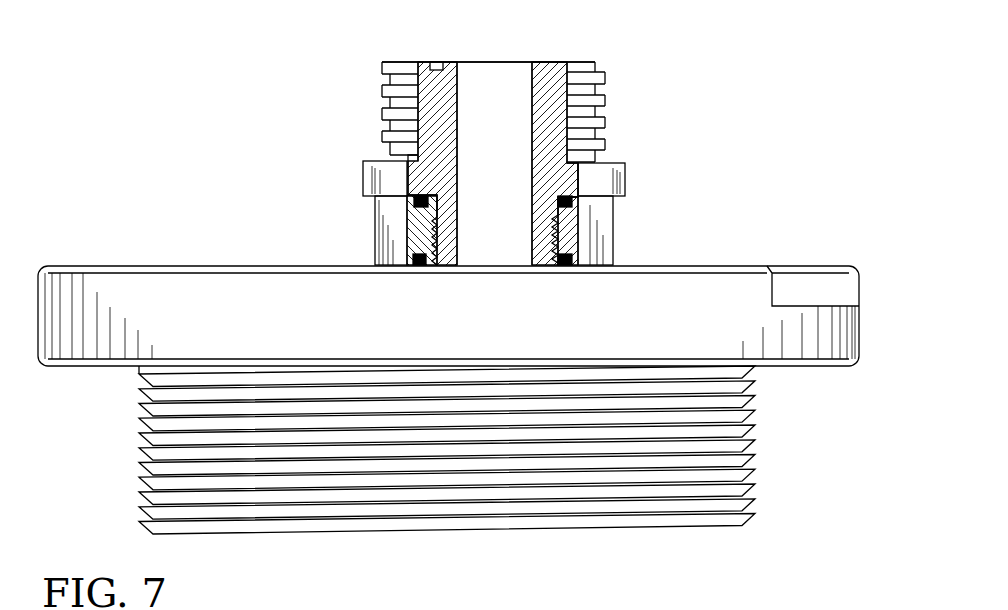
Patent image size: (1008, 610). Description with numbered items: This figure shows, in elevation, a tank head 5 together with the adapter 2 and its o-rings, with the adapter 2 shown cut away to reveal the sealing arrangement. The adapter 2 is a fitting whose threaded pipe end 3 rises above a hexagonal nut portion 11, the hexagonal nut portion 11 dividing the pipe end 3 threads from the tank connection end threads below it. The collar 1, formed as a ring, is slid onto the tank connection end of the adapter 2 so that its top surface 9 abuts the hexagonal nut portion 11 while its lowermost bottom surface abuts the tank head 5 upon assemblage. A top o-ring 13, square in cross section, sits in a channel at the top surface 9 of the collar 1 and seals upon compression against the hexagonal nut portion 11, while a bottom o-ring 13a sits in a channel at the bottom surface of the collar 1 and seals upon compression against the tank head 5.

The collar 1 is at (397, 218).
The adapter 2 is at (500, 62).
The pipe end 3 is at (552, 84).
The tank head 5 is at (232, 290).
The top surface 9 is at (605, 197).
The hexagonal nut portion 11 is at (387, 175).
The top o-ring 13 is at (562, 195).
The bottom o-ring 13a is at (566, 255).